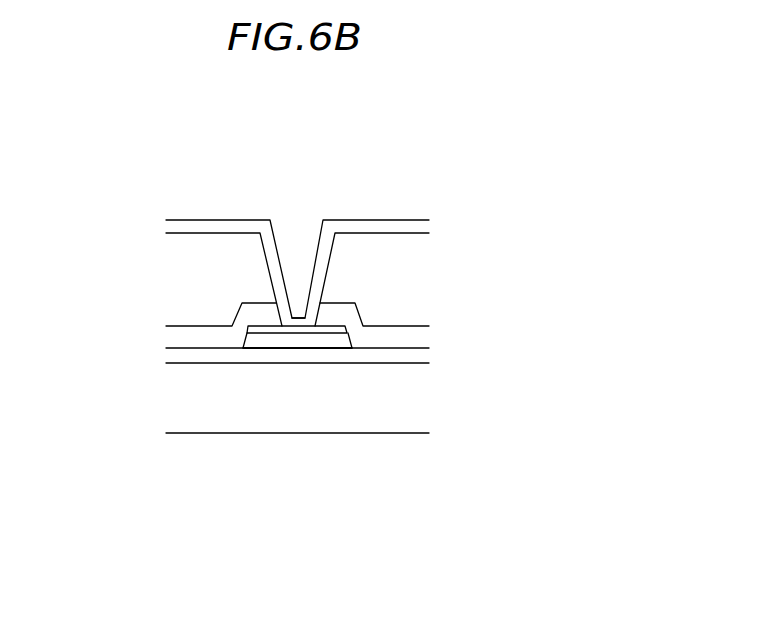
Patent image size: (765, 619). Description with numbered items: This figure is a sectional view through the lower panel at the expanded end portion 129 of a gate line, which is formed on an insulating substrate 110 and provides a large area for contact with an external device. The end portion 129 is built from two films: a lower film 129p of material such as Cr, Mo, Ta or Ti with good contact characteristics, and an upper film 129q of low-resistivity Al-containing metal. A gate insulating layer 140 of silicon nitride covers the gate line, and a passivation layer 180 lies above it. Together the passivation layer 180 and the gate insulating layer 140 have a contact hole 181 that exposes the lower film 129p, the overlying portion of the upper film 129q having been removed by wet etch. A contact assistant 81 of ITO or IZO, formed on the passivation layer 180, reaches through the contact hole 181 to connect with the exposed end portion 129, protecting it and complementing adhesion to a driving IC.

The contact assistant 81 is at (238, 225).
The contact hole 181 is at (297, 233).
The passivation layer 180 is at (371, 267).
The upper film of the end portion of the gate line 129q is at (268, 328).
The lower film of the end portion of the gate line 129p is at (303, 343).
The end portion of the gate line 129 is at (327, 488).
The gate insulating layer 140 is at (192, 357).
The insulating substrate 110 is at (365, 410).